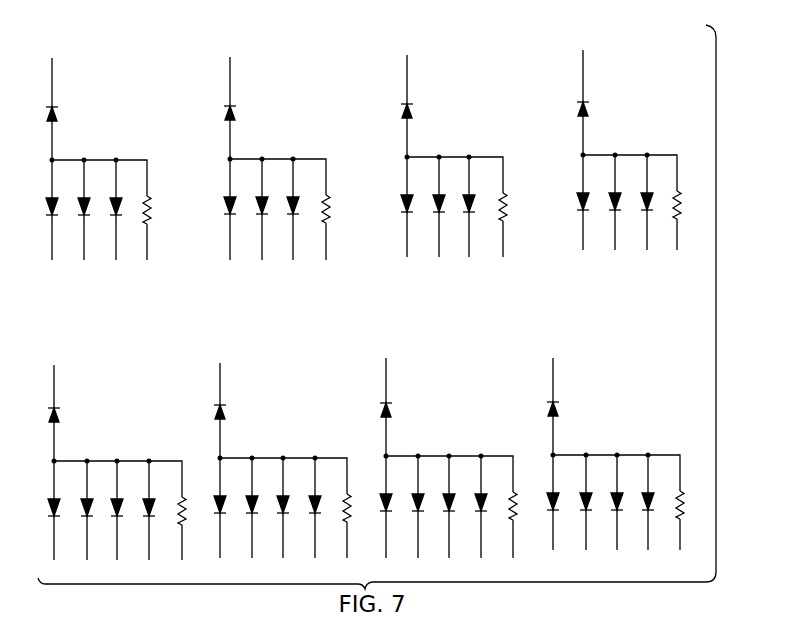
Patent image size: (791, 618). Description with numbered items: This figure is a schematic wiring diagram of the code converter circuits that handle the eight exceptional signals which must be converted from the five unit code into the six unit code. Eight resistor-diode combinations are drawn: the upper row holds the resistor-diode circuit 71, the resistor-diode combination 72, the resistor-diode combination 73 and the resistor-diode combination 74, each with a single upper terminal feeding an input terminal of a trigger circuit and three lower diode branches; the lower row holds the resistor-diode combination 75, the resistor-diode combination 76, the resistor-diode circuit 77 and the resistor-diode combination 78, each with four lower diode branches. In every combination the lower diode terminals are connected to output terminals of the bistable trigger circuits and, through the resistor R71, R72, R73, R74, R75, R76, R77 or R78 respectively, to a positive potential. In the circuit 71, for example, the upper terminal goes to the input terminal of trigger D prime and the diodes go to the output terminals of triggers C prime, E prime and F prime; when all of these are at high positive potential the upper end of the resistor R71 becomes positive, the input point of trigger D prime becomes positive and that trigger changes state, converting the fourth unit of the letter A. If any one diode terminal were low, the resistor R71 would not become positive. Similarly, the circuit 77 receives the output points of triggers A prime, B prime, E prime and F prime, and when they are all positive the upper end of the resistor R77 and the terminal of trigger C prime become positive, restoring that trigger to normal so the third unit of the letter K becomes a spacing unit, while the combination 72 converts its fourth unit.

The resistor-diode circuit 71 is at (108, 161).
The resistor-diode combination 72 is at (286, 160).
The resistor-diode combination 73 is at (463, 157).
The resistor-diode combination 74 is at (638, 152).
The resistor-diode combination 75 is at (126, 464).
The resistor-diode combination 76 is at (292, 462).
The resistor-diode circuit 77 is at (458, 458).
The resistor-diode combination 78 is at (625, 455).
The resistor R71 is at (161, 210).
The resistor R72 is at (340, 209).
The resistor R73 is at (517, 207).
The resistor R74 is at (691, 205).
The resistor R75 is at (196, 511).
The resistor R76 is at (361, 508).
The resistor R77 is at (527, 506).
The resistor R78 is at (694, 505).